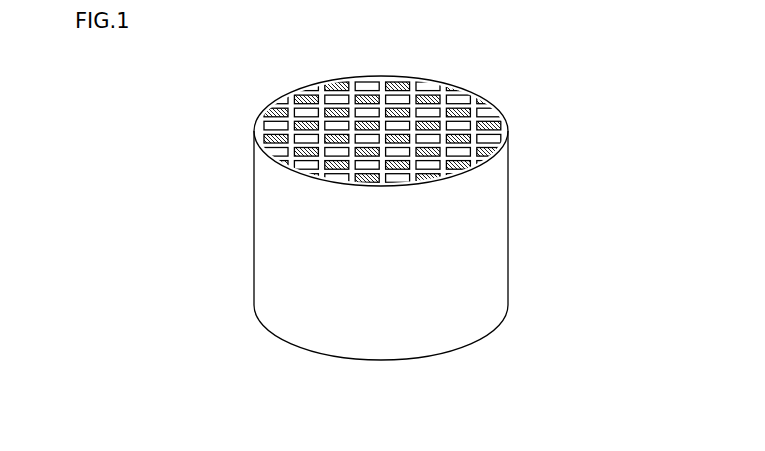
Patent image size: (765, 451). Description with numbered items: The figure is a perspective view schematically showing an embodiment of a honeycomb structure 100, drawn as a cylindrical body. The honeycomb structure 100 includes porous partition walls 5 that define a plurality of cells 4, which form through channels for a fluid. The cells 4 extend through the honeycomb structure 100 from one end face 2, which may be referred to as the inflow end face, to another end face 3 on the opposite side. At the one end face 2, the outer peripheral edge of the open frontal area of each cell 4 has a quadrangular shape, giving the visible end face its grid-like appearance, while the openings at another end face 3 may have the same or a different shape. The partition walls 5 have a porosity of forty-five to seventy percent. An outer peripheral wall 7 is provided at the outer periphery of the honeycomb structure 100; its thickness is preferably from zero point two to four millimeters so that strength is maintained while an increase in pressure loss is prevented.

The honeycomb structure 100 is at (578, 73).
The one end face 2 is at (382, 77).
The another end face 3 is at (375, 361).
The cell 4 is at (460, 126).
The partition wall 5 is at (384, 163).
The outer peripheral wall 7 is at (258, 129).